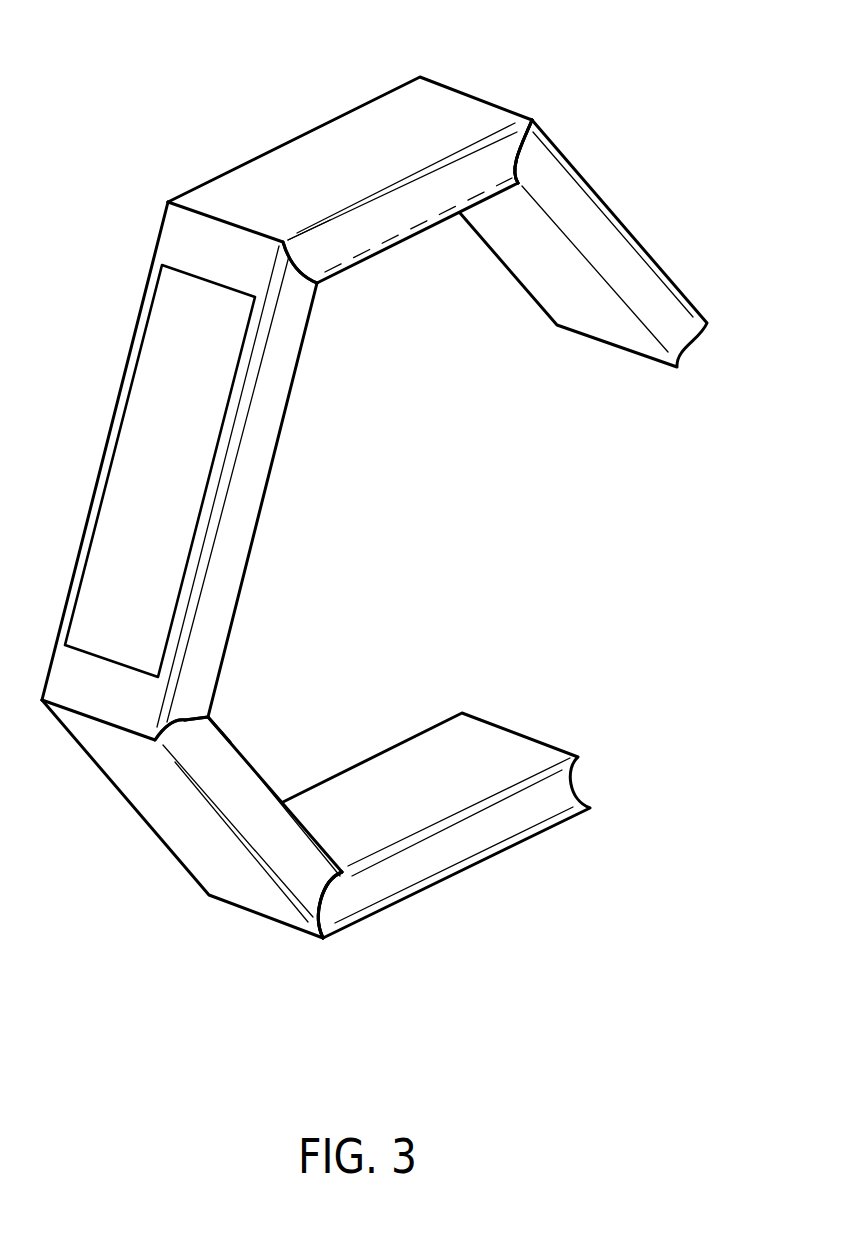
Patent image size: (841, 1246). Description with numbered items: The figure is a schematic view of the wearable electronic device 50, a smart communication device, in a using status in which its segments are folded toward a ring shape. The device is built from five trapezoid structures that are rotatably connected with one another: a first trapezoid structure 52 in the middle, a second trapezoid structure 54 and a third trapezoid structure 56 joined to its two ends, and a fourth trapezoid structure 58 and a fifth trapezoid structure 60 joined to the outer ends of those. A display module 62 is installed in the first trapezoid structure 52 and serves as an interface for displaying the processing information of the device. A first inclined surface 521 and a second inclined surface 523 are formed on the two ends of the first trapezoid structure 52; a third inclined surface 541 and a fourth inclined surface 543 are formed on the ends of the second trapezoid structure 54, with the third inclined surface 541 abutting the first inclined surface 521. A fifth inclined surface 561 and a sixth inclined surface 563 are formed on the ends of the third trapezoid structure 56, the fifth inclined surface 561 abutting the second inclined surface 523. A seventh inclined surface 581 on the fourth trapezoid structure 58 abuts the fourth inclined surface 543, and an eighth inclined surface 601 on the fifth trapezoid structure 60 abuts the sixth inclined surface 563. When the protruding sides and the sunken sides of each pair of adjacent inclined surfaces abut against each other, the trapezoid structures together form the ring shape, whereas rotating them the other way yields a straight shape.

The wearable electronic device 50 is at (175, 62).
The first trapezoid structure 52 is at (350, 372).
The first inclined surface 521 is at (296, 264).
The second inclined surface 523 is at (185, 720).
The second trapezoid structure 54 is at (488, 256).
The third inclined surface 541 is at (312, 254).
The fourth inclined surface 543 is at (510, 167).
The third trapezoid structure 56 is at (281, 668).
The fifth inclined surface 561 is at (217, 733).
The sixth inclined surface 563 is at (330, 886).
The fourth trapezoid structure 58 is at (631, 207).
The seventh inclined surface 581 is at (520, 150).
The fifth trapezoid structure 60 is at (455, 883).
The eighth inclined surface 601 is at (328, 903).
The display module 62 is at (170, 491).